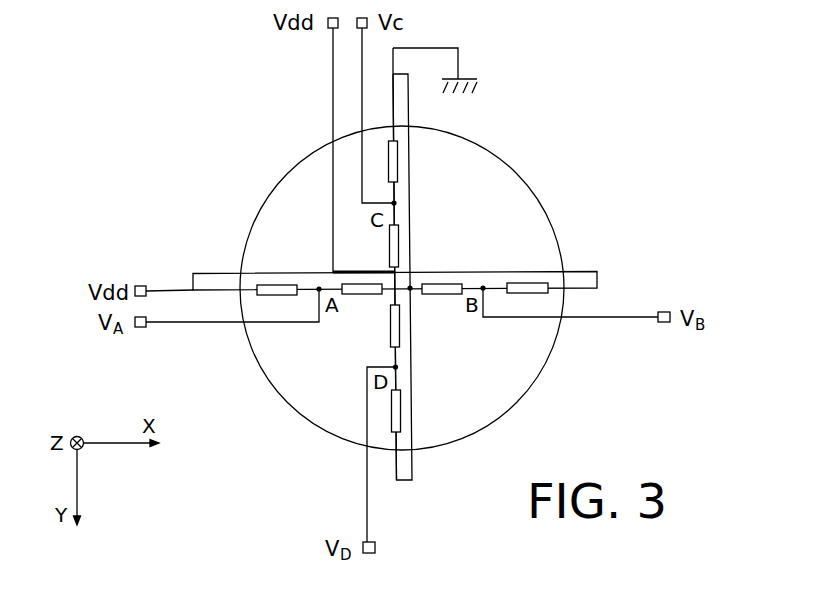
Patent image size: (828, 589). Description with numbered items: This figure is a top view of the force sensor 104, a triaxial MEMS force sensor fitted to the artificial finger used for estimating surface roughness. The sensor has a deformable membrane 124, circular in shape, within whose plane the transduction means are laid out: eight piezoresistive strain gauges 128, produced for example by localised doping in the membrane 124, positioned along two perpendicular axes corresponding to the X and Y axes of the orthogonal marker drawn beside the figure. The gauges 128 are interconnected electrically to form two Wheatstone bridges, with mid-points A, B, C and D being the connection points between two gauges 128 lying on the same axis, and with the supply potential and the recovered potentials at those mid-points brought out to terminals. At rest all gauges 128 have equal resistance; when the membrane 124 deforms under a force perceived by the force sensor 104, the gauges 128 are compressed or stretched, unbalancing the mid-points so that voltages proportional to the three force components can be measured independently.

The force sensor 104 is at (552, 218).
The deformable membrane 124 is at (283, 197).
The piezoresistive strain gauges 128 is at (393, 246).